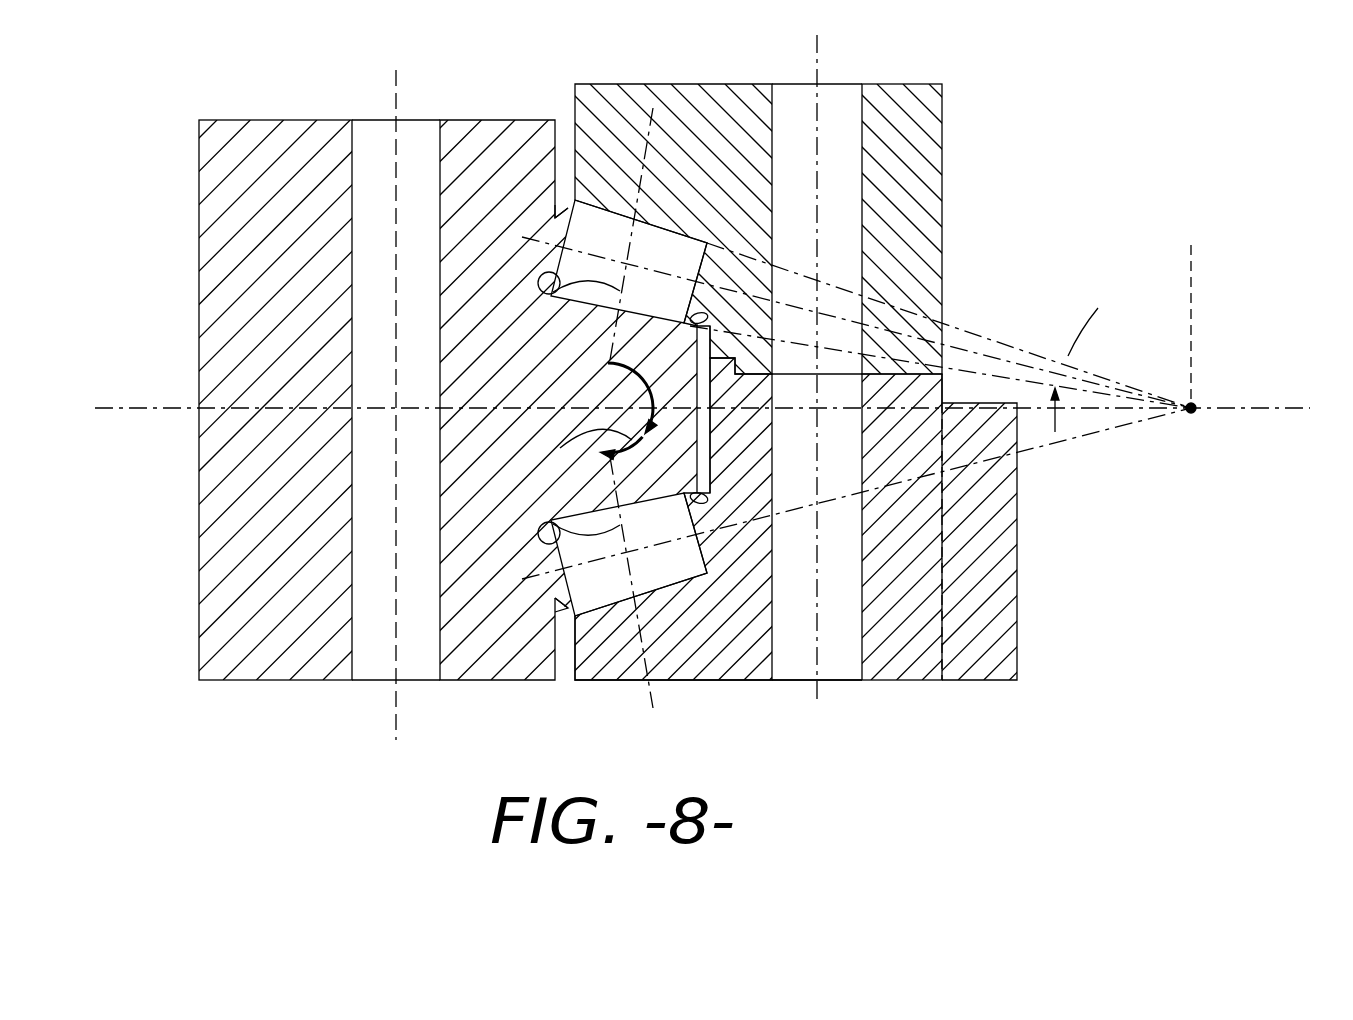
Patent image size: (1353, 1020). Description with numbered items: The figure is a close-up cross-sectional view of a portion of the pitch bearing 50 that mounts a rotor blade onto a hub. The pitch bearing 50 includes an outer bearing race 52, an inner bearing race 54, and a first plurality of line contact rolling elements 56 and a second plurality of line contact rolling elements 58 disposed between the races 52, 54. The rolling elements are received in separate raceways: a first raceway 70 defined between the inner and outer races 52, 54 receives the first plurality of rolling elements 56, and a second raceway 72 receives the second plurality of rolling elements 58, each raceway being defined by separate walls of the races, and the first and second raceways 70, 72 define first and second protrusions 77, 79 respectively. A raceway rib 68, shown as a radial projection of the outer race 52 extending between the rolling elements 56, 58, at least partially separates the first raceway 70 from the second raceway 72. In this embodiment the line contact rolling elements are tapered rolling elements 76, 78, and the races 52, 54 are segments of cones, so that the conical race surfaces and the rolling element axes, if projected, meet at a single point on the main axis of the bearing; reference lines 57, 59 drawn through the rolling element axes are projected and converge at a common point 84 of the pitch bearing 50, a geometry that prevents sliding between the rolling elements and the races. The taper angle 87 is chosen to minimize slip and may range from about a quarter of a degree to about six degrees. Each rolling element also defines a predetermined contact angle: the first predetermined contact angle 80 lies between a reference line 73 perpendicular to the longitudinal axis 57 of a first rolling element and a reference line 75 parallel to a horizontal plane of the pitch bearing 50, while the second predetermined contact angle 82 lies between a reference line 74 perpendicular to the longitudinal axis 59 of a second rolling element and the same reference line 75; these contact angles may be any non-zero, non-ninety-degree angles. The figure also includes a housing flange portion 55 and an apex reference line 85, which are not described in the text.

The pitch bearing 50 is at (702, 385).
The outer bearing race 52 is at (287, 657).
The inner bearing race 54 is at (717, 660).
The housing flange portion 55 is at (993, 653).
The first plurality of line contact rolling elements 56 is at (600, 240).
The longitudinal axis 57 is at (668, 273).
The second plurality of line contact rolling elements 58 is at (601, 580).
The longitudinal axis 59 is at (647, 560).
The raceway rib 68 is at (579, 455).
The first raceway 70 is at (626, 401).
The second raceway 72 is at (572, 650).
The reference line 73 is at (542, 280).
The reference line 74 is at (542, 532).
The reference line 75 is at (1100, 407).
The tapered rolling elements 76 is at (658, 236).
The first protrusions 77 is at (560, 225).
The tapered rolling elements 78 is at (650, 565).
The second protrusions 79 is at (718, 318).
The first predetermined contact angle 80 is at (642, 378).
The second predetermined contact angle 82 is at (640, 437).
The common point 84 is at (1192, 412).
The apex reference line 85 is at (1193, 278).
The taper angle 87 is at (1066, 360).